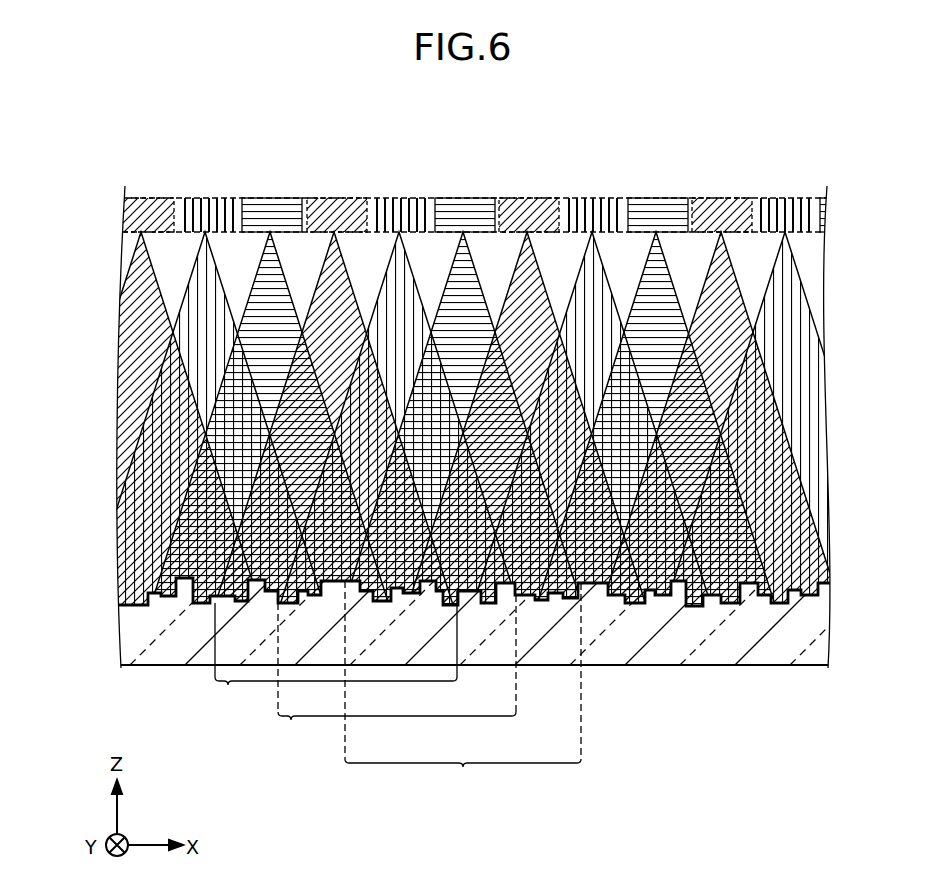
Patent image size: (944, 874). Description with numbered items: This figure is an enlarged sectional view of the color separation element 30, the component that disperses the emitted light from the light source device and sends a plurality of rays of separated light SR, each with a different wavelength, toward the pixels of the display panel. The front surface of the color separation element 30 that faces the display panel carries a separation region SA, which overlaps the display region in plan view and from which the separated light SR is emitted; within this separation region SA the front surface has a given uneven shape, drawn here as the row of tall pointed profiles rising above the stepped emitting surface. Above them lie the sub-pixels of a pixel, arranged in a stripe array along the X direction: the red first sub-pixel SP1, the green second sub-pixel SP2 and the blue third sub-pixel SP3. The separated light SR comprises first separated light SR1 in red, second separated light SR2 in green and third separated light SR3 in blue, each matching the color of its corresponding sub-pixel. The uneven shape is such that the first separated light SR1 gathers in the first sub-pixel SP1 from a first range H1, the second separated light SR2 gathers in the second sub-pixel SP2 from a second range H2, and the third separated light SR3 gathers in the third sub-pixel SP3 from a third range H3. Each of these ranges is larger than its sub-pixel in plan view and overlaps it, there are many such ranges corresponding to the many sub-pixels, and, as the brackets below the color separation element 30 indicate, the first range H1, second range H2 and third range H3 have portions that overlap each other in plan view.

The separated light SR is at (122, 241).
The first separated light SR1 is at (313, 263).
The second separated light SR2 is at (378, 263).
The third separated light SR3 is at (443, 263).
The first sub-pixel SP1 is at (337, 187).
The second sub-pixel SP2 is at (400, 187).
The third sub-pixel SP3 is at (465, 187).
The separation region SA is at (792, 558).
The color separation element 30 is at (667, 659).
The first range H1 is at (336, 654).
The second range H2 is at (397, 674).
The third range H3 is at (463, 693).